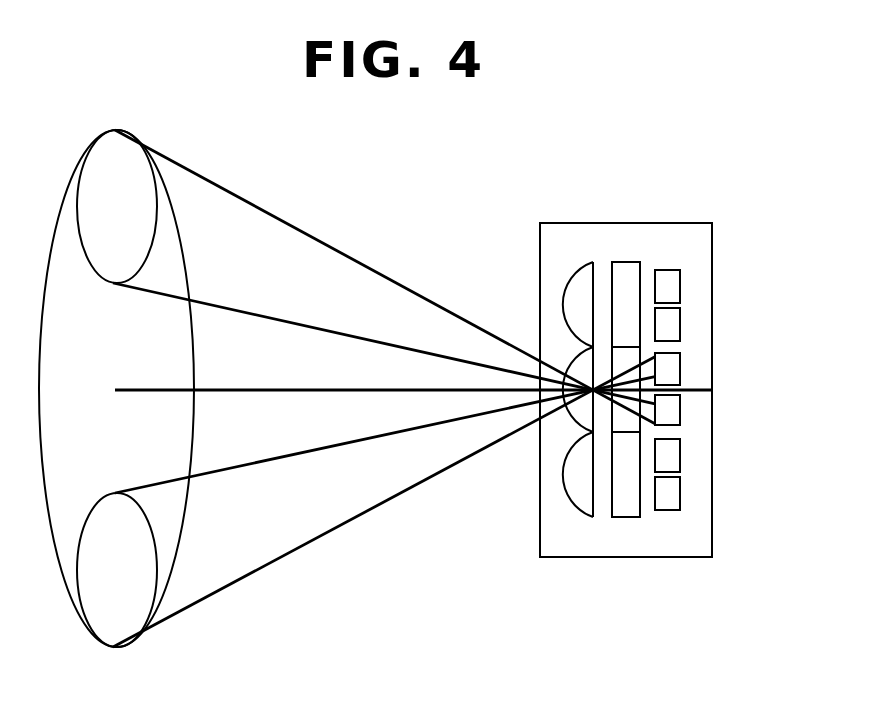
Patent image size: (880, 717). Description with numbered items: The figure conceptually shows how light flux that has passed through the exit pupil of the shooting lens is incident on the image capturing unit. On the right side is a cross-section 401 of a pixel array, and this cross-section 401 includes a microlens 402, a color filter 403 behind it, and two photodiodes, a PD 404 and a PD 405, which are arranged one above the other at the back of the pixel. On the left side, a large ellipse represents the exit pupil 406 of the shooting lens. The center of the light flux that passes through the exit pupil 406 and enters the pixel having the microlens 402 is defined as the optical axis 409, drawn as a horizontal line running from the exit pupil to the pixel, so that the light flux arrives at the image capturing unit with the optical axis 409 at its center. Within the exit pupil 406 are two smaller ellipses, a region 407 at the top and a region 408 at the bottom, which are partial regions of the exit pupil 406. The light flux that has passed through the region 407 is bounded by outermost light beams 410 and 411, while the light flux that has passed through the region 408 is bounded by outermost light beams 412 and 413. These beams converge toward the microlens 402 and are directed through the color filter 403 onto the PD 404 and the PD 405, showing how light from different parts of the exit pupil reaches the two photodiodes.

The cross-section of a pixel array 401 is at (693, 223).
The microlens 402 is at (569, 266).
The color filter 403 is at (632, 260).
The PD 404 is at (680, 367).
The PD 405 is at (680, 406).
The exit pupil 406 is at (188, 237).
The region 407 is at (115, 130).
The region 408 is at (115, 492).
The optical axis 409 is at (227, 388).
The outermost light beam 410 is at (375, 276).
The outermost light beam 411 is at (297, 323).
The outermost light beam 412 is at (301, 544).
The outermost light beam 413 is at (301, 451).